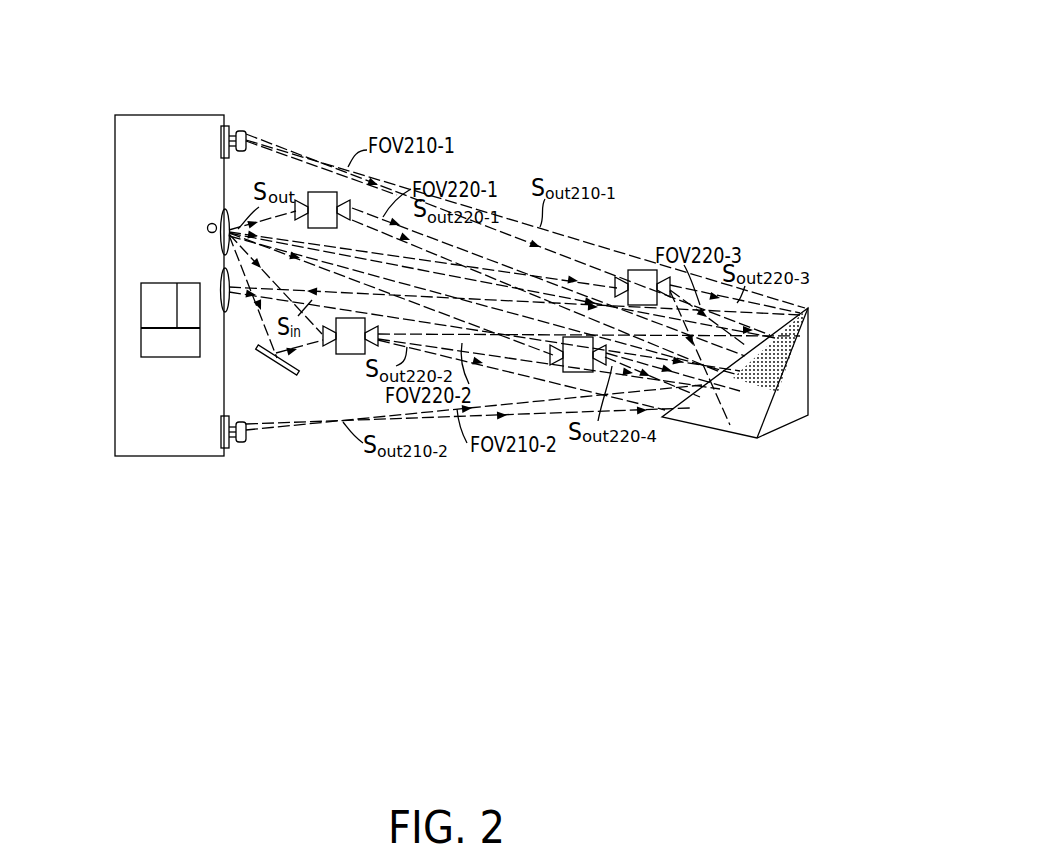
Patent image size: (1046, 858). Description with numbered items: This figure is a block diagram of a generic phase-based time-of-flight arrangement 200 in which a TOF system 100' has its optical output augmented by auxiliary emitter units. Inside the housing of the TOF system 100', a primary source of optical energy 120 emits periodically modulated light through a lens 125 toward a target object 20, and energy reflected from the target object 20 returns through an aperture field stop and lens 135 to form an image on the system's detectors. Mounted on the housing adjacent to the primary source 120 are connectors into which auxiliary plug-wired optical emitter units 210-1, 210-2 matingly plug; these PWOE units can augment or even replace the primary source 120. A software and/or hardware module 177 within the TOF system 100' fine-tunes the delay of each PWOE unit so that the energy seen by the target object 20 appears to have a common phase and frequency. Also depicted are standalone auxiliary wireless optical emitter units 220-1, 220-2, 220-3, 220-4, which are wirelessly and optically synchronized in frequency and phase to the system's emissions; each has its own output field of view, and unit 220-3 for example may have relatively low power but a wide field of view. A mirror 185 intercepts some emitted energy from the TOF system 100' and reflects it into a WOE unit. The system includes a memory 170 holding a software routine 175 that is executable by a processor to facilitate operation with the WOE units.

The TOF system 100' is at (146, 248).
The sensing system 200 is at (463, 108).
The WOE unit / connector 220-1 is at (227, 126).
The PWOE unit 210-1 is at (242, 129).
The WOE unit / connector 220-2 is at (227, 449).
The PWOE unit 210-2 is at (243, 443).
The WOE unit 220-3 is at (642, 270).
The WOE unit 220-4 is at (572, 366).
The lens 125 is at (228, 214).
The aperture field stop and lens 135 is at (230, 292).
The source of optical energy 120 is at (208, 223).
The memory 170 is at (163, 318).
The software routine 175 is at (188, 283).
The software and/or hardware module 177 is at (183, 345).
The mirror 185 is at (262, 348).
The target object 20 is at (820, 330).